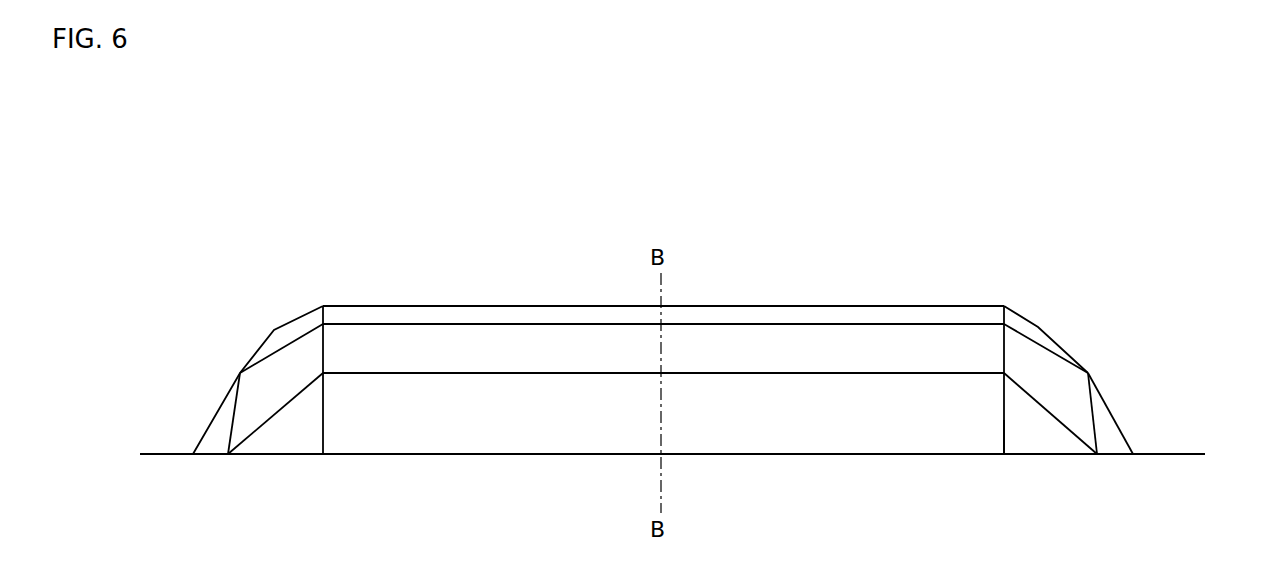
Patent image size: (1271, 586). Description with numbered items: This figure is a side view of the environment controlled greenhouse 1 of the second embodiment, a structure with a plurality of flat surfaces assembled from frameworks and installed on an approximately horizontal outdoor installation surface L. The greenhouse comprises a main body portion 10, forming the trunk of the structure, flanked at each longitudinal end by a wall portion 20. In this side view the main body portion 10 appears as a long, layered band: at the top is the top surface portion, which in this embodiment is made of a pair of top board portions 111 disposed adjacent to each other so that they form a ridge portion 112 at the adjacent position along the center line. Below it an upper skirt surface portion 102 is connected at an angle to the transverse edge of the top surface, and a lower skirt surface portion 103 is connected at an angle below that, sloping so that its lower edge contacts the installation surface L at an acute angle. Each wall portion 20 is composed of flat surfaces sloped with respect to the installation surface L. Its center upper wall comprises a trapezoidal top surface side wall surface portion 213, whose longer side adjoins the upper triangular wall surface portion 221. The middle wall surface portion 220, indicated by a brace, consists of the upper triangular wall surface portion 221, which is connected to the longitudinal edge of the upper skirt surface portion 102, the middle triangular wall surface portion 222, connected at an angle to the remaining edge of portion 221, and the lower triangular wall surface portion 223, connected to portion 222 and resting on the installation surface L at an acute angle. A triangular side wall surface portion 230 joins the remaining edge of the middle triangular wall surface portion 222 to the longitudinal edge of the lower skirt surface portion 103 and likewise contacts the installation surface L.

The environment controlled greenhouse 1 is at (1076, 125).
The main body portion 10 is at (603, 282).
The top board portion 111 is at (415, 317).
The ridge portion 112 is at (485, 306).
The upper skirt surface portion 102 is at (788, 359).
The lower skirt surface portion 103 is at (898, 409).
The wall portion 20 is at (283, 304).
The top surface side wall surface portion 213 is at (1028, 327).
The middle wall surface portion 220 is at (1135, 282).
The upper triangular wall surface portion 221 is at (1033, 353).
The middle triangular wall surface portion 222 is at (1070, 397).
The lower triangular wall surface portion 223 is at (1103, 432).
The side wall surface portion 230 is at (1035, 428).
The installation surface L is at (1187, 453).